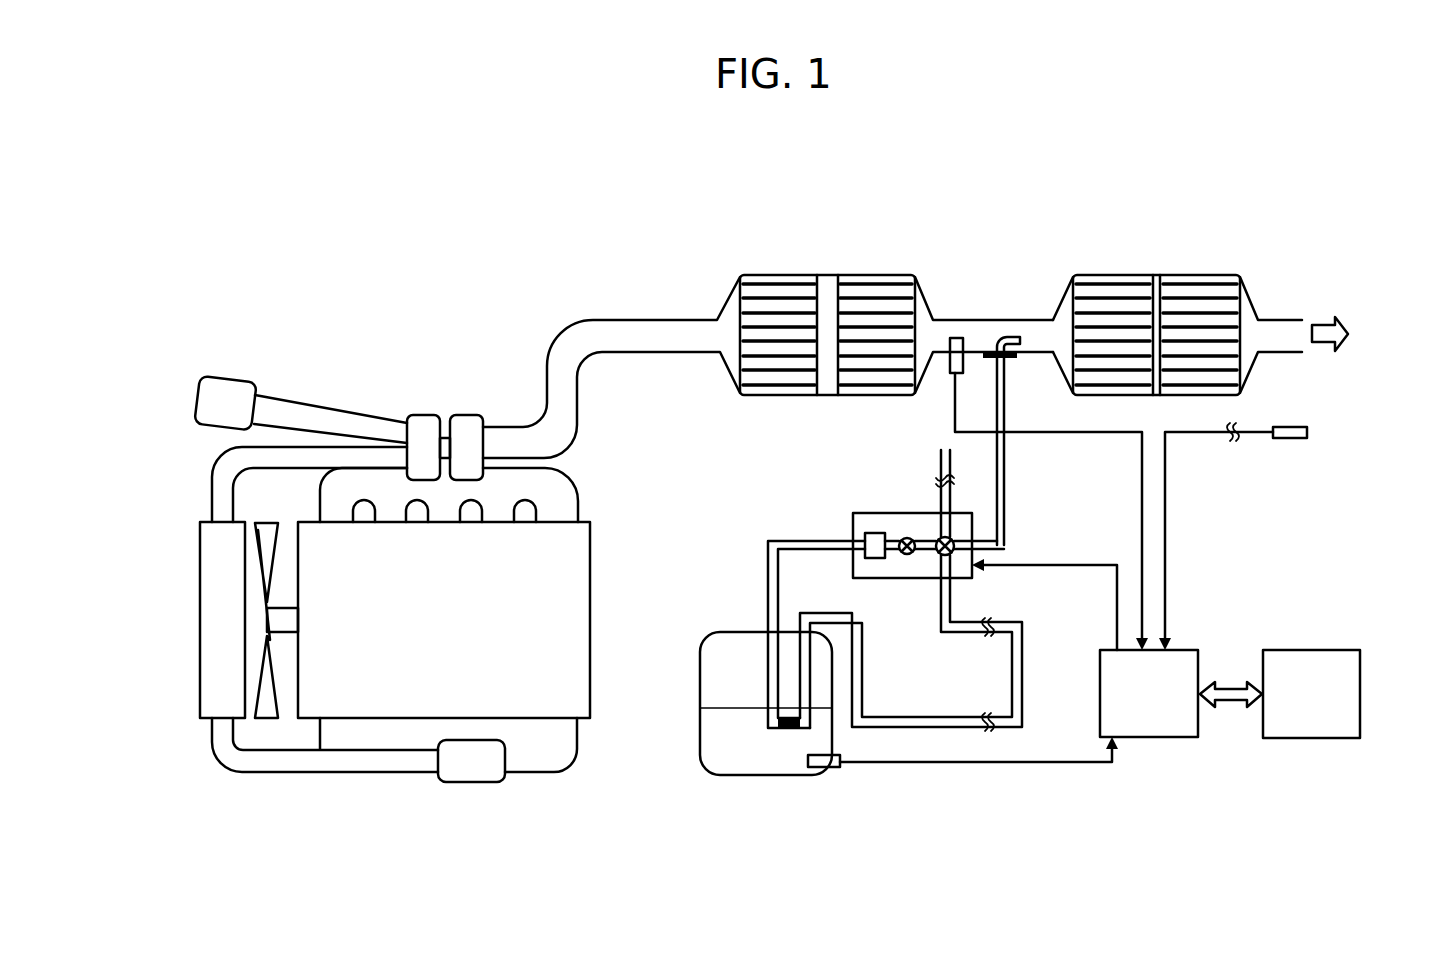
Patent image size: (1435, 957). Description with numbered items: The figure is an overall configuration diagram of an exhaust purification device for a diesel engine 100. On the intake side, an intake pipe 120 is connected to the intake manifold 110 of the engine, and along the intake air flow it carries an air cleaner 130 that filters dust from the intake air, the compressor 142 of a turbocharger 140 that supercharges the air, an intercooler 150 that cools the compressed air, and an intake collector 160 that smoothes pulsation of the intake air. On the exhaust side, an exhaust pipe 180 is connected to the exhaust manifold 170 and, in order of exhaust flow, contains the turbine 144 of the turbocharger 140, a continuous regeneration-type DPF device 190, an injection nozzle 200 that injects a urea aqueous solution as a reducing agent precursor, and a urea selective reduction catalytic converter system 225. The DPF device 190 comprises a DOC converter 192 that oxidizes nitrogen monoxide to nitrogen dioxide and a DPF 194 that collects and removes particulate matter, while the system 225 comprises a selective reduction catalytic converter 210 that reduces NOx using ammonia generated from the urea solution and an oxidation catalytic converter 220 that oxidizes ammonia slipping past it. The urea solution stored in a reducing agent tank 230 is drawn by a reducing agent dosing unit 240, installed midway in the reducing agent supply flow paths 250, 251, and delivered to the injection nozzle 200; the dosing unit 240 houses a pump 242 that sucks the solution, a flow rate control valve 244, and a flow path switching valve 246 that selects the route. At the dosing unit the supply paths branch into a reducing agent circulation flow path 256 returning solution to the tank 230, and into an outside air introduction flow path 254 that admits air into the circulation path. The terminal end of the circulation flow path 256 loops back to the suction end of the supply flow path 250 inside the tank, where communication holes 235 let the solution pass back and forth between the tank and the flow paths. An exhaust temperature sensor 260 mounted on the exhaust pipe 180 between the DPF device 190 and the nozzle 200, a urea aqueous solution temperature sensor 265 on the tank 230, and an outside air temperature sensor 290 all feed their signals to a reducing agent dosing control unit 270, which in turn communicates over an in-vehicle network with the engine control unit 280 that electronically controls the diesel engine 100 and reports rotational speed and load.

The diesel engine 100 is at (592, 557).
The intake manifold 110 is at (577, 760).
The intake pipe 120 is at (210, 480).
The air cleaner 130 is at (218, 378).
The turbocharger 140 is at (444, 382).
The compressor 142 is at (418, 415).
The turbine 144 is at (471, 415).
The intercooler 150 is at (200, 628).
The intake collector 160 is at (470, 785).
The exhaust manifold 170 is at (580, 492).
The exhaust pipe 180 is at (640, 320).
The continuous regeneration-type diesel particulate filter device 190 is at (896, 273).
The DOC converter 192 is at (780, 275).
The DPF 194 is at (876, 296).
The injection nozzle 200 is at (1013, 332).
The selective reduction catalytic converter 210 is at (1112, 275).
The oxidation catalytic converter 220 is at (1200, 296).
The urea selective reduction catalytic converter system 225 is at (1230, 273).
The reducing agent tank 230 is at (700, 645).
The communication holes 235 is at (782, 730).
The reducing agent dosing unit 240 is at (860, 552).
The pump 242 is at (868, 533).
The flow rate control valve 244 is at (898, 555).
The flow path switching valve 246 is at (942, 553).
The reducing agent supply flow path 250 is at (768, 597).
The reducing agent supply flow path 251 is at (1005, 510).
The outside air introduction flow path 254 is at (940, 463).
The reducing agent circulation flow path 256 is at (928, 730).
The exhaust temperature sensor 260 is at (952, 373).
The urea aqueous solution temperature sensor 265 is at (825, 768).
The reducing agent dosing control unit (DCU) 270 is at (1142, 738).
The engine control unit (ECU) 280 is at (1330, 740).
The outside air temperature sensor 290 is at (1297, 440).